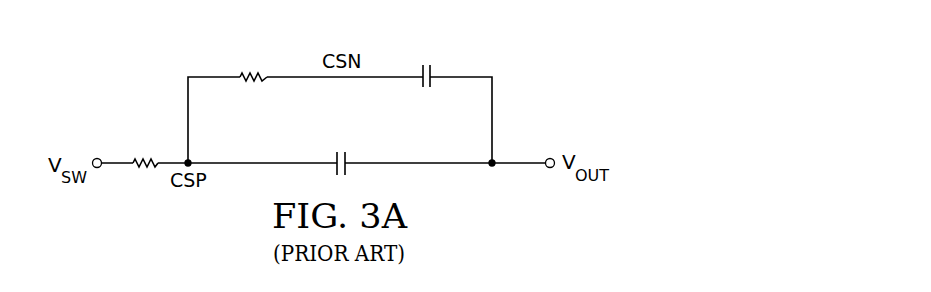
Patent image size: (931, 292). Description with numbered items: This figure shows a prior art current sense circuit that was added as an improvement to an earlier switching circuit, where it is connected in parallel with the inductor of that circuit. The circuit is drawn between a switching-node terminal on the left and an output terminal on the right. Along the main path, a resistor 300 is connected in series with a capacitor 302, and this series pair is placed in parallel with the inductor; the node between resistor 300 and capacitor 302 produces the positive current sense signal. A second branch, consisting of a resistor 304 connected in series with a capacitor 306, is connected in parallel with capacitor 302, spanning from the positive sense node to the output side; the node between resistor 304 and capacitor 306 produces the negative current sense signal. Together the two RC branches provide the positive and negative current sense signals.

The resistor 300 is at (138, 172).
The capacitor 302 is at (340, 150).
The resistor 304 is at (250, 72).
The capacitor 306 is at (425, 63).